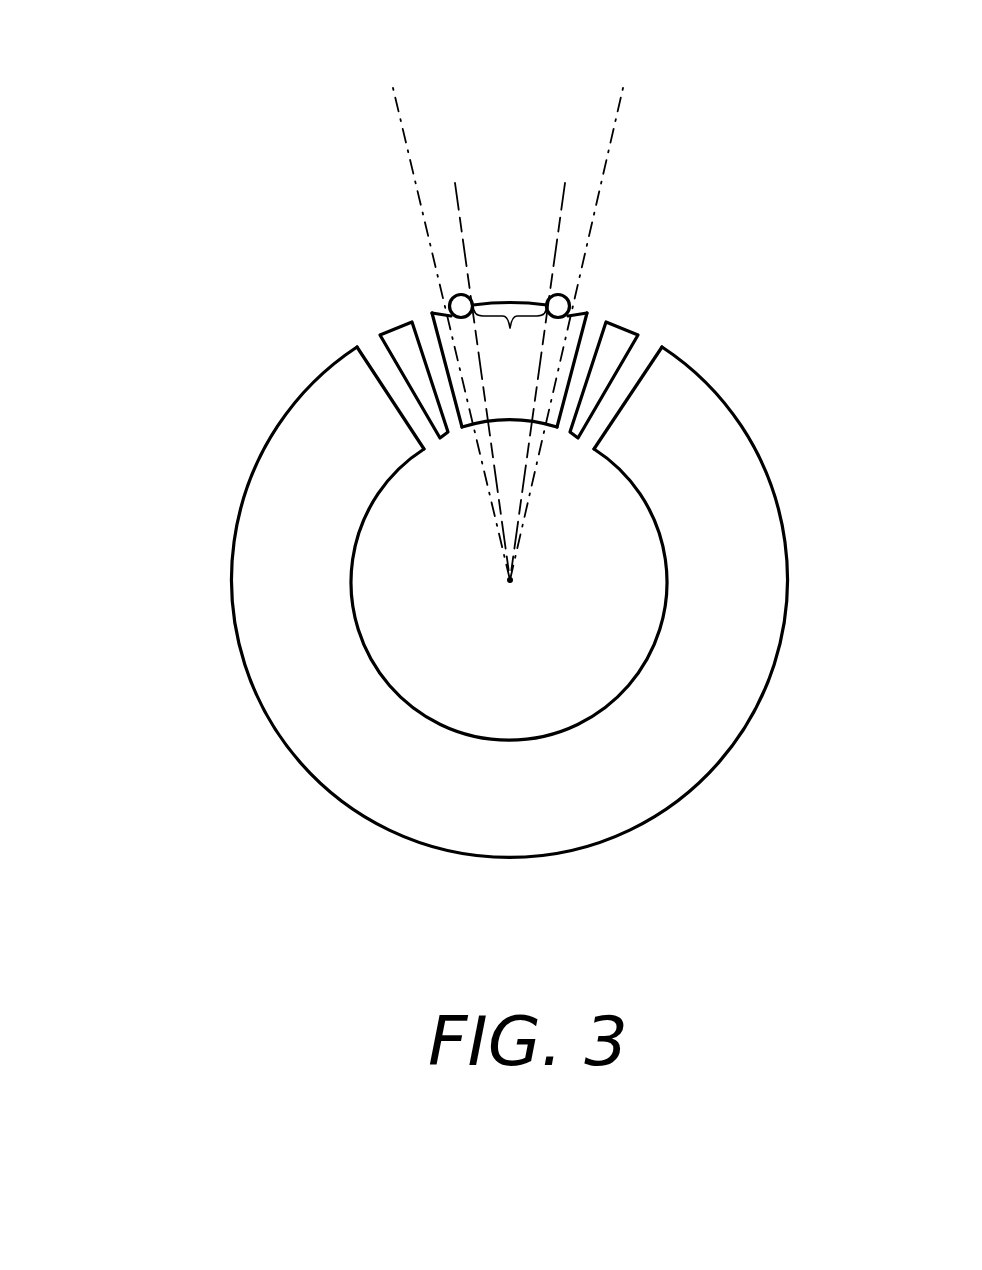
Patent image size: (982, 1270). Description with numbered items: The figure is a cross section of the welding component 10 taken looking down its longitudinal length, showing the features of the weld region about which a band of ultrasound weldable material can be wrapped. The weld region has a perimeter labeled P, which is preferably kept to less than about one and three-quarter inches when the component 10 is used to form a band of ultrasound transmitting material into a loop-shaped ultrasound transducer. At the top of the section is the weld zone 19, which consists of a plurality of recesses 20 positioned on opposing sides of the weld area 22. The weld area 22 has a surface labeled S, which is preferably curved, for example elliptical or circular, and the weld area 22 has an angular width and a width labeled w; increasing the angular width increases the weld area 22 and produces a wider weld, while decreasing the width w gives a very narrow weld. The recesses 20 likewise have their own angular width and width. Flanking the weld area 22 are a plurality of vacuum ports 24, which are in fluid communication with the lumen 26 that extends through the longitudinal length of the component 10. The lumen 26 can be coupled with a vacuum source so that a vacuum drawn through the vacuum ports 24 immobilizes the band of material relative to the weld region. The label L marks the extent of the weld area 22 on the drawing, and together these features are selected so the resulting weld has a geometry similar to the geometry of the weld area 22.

The component 10 is at (463, 500).
The weld zone 19 is at (400, 108).
The recesses 20 is at (454, 298).
The weld area 22 is at (527, 300).
The vacuum ports 24 is at (421, 316).
The lumen 26 is at (532, 658).
The perimeter P is at (783, 518).
The surface S is at (493, 301).
The width w is at (566, 301).
The tooth face length L is at (510, 336).